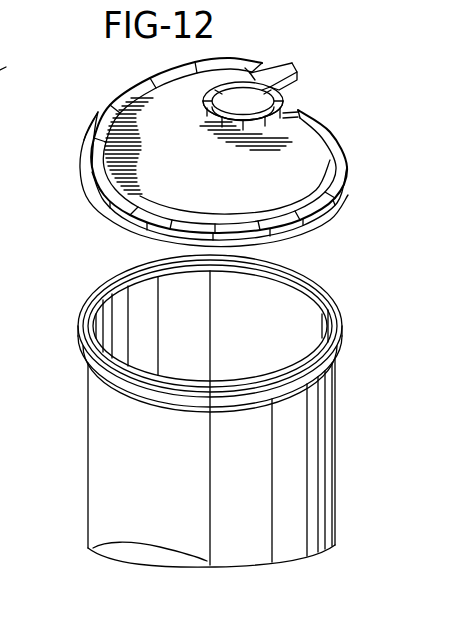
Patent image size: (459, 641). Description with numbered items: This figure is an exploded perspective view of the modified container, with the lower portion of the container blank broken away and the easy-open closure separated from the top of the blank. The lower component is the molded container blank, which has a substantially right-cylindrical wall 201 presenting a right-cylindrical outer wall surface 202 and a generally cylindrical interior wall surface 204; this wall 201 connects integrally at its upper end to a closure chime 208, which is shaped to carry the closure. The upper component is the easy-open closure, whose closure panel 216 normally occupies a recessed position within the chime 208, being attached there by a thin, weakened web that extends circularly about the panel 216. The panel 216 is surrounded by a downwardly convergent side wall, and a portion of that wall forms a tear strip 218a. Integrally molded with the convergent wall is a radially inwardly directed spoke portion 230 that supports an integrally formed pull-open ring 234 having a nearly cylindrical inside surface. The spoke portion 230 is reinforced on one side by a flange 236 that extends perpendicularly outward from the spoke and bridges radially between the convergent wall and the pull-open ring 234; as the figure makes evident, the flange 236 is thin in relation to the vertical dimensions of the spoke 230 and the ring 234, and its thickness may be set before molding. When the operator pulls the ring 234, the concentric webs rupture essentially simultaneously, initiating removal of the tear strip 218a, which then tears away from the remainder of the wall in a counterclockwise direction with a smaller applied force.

The right-cylindrical wall 201 is at (9, 346).
The right-cylindrical outer wall surface 202 is at (90, 441).
The generally cylindrical interior wall surface 204 is at (263, 352).
The closure chime 208 is at (80, 353).
The closure panel 216 is at (240, 192).
The tear strip 218a is at (127, 83).
The spoke portion 230 is at (297, 77).
The pull-open ring 234 is at (218, 134).
The flange 236 is at (268, 78).